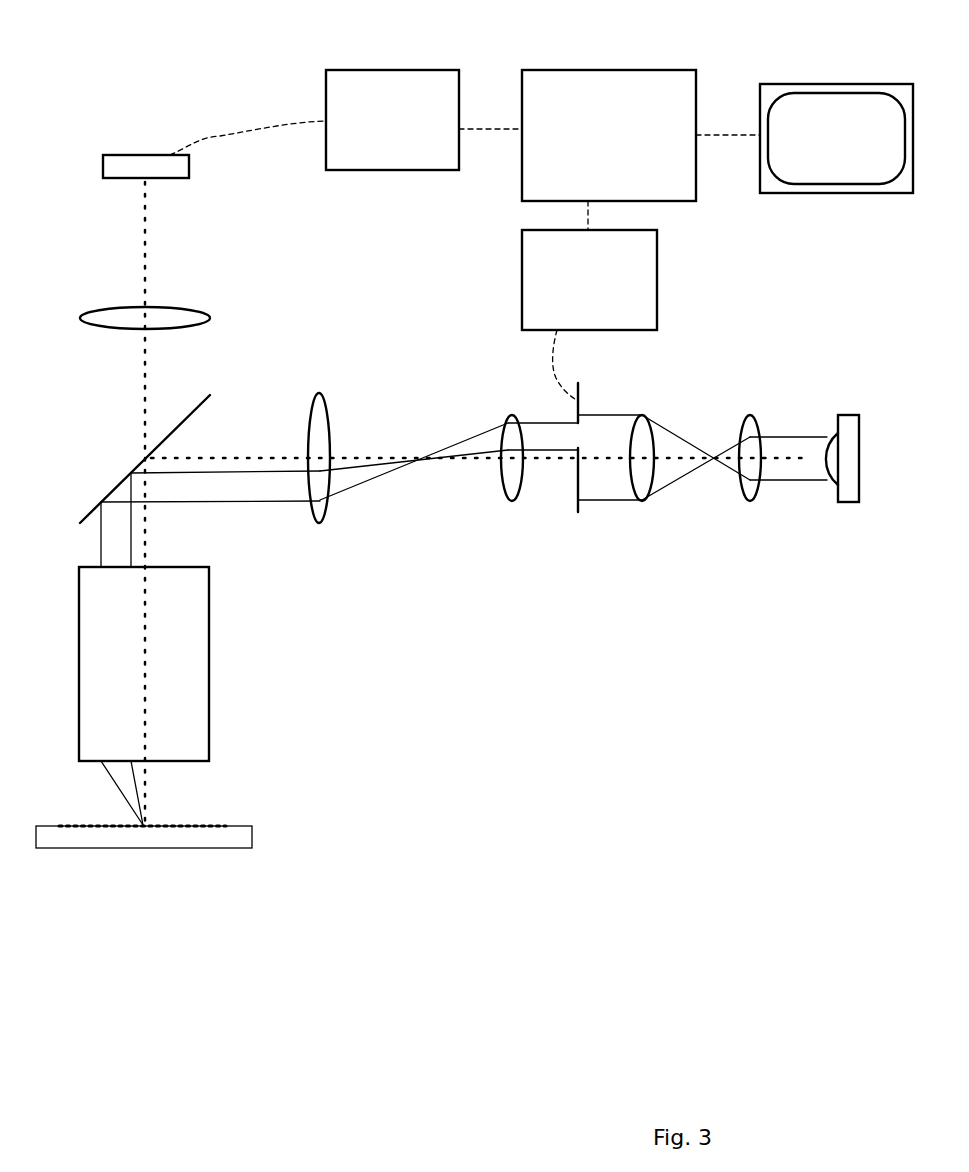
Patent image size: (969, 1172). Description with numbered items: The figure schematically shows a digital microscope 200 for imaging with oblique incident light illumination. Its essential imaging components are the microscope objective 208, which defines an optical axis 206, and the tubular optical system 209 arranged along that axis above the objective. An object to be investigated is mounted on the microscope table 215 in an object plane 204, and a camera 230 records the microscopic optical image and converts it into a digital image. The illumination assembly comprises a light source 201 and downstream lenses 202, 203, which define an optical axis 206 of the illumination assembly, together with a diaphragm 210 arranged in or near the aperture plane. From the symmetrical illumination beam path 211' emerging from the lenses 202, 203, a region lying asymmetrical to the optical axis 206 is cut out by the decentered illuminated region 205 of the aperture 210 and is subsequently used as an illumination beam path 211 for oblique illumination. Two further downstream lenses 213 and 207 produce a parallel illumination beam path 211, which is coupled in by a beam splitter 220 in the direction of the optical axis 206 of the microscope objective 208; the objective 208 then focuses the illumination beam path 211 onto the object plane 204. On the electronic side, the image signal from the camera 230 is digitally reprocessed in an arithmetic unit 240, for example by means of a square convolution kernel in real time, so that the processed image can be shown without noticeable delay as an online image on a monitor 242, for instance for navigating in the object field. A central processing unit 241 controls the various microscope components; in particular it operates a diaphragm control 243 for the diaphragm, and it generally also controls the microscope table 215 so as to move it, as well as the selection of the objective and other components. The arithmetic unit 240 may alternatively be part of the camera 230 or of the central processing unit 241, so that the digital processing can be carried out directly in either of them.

The microscope 200 is at (479, 704).
The light source 201 is at (861, 505).
The lens 202 is at (750, 508).
The lens 203 is at (641, 508).
The object plane 204 is at (227, 822).
The decentered illuminated region 205 is at (588, 428).
The optical axis 206 is at (149, 280).
The lens 207 is at (315, 530).
The microscope objective 208 is at (76, 642).
The tubular optical system 209 is at (101, 332).
The diaphragm 210 is at (578, 520).
The illumination beam path 211 is at (339, 495).
The symmetrical illumination beam path 211' is at (746, 476).
The lens 213 is at (512, 507).
The microscope table 215 is at (256, 838).
The beam splitter 220 is at (109, 485).
The camera 230 is at (107, 181).
The arithmetic unit 240 is at (404, 67).
The central processing unit 241 is at (604, 67).
The monitor 242 is at (842, 81).
The diaphragm control 243 is at (660, 288).